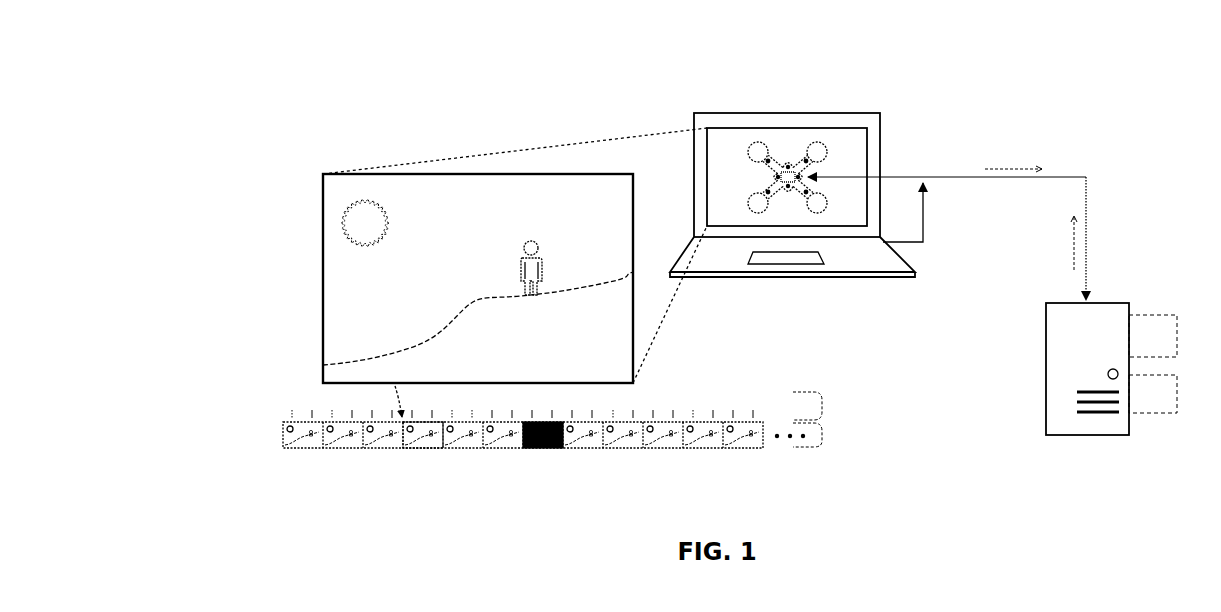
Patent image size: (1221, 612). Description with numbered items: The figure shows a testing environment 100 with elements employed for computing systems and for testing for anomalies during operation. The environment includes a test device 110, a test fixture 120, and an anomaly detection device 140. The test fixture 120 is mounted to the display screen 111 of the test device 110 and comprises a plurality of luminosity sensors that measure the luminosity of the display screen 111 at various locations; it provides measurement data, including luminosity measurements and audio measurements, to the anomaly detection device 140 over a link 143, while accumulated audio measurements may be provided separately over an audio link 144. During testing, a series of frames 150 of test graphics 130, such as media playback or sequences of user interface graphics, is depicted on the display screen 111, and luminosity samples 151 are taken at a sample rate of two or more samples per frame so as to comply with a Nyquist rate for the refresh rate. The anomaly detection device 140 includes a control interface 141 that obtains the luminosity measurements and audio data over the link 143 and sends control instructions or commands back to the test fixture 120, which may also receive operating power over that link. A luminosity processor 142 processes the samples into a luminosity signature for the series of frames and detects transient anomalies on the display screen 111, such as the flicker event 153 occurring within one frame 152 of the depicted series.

The testing environment 100 is at (325, 50).
The test device 110 is at (823, 104).
The display screen 111 is at (787, 177).
The test fixture 120 is at (757, 151).
The test graphics 130 is at (478, 278).
The anomaly detection device 140 is at (1087, 369).
The control interface 141 is at (1153, 336).
The luminosity processor 142 is at (1153, 394).
The link 143 is at (1092, 199).
The audio link 144 is at (928, 244).
The frames 150 is at (822, 436).
The luminosity samples 151 is at (822, 407).
The frame 152 is at (382, 452).
The flicker event 153 is at (537, 456).